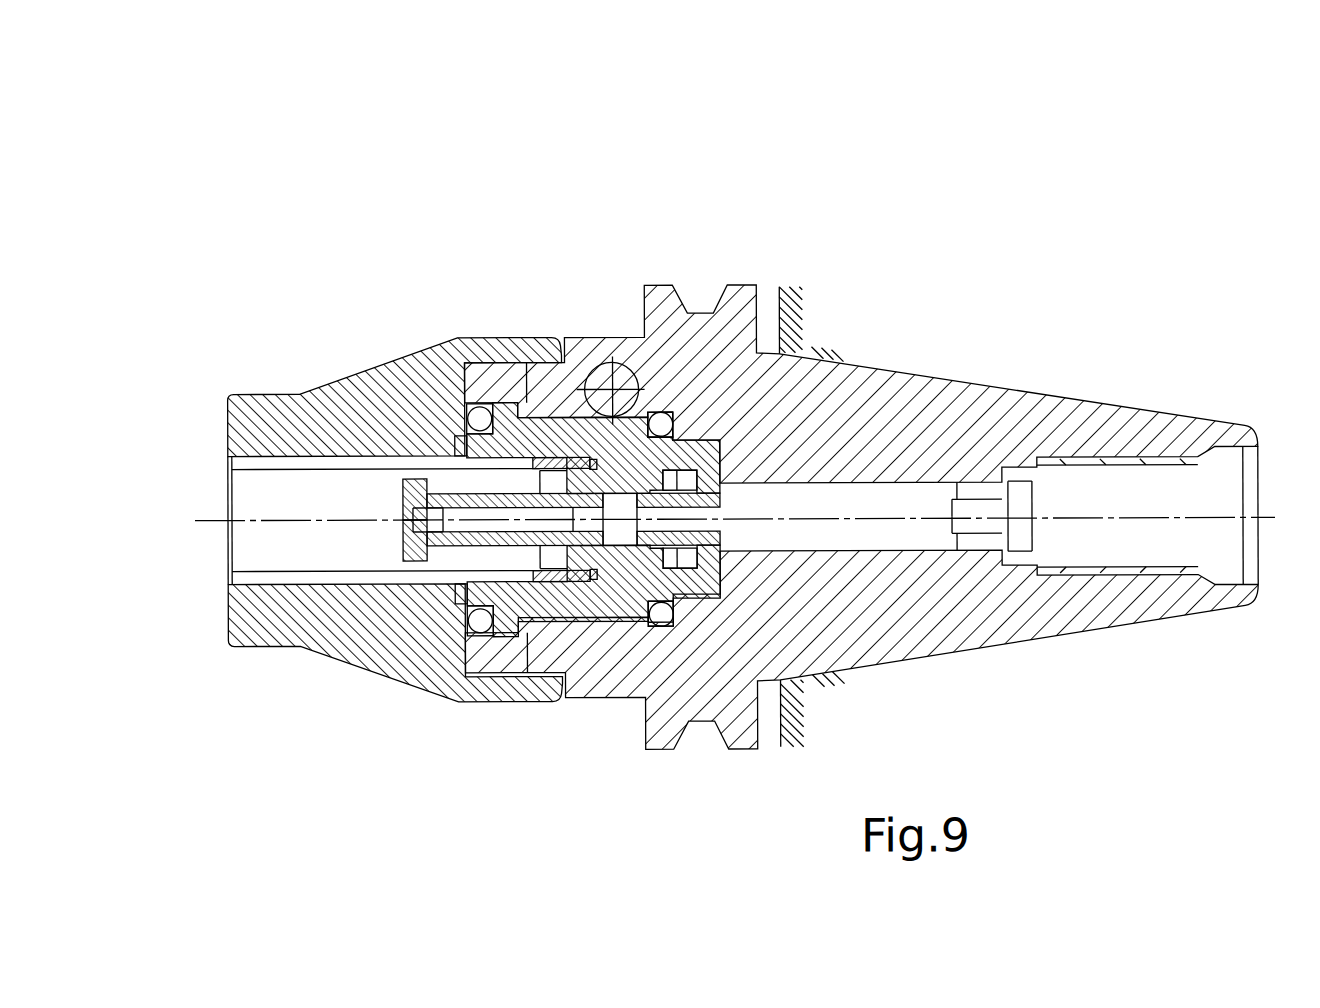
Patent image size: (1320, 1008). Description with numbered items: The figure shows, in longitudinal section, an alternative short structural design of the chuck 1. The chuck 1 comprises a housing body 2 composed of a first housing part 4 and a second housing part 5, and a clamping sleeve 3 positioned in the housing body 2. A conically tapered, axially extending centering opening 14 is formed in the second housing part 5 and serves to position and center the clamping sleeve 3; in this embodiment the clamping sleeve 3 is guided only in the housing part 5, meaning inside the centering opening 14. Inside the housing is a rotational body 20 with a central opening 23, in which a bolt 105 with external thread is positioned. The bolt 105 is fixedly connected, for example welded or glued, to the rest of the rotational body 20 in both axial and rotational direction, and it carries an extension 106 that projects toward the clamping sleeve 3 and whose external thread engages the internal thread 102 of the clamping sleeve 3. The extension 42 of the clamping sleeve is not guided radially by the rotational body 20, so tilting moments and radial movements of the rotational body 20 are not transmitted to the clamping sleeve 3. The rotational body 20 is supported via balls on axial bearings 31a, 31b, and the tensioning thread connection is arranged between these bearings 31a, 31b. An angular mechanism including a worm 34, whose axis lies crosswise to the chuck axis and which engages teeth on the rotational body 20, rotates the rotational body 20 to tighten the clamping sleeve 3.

The chuck 1 is at (710, 175).
The housing body 2 is at (533, 210).
The clamping sleeve 3 is at (226, 578).
The first housing part 4 is at (983, 423).
The second housing part 5 is at (316, 412).
The centering opening 14 is at (220, 605).
The rotational body 20 is at (527, 420).
The central opening 23 is at (683, 480).
The axial bearing 31a is at (478, 622).
The axial bearing 31b is at (663, 615).
The worm 34 is at (607, 383).
The extension 42 is at (648, 410).
The internal thread 102 is at (587, 578).
The bolt 105 is at (838, 378).
The extension 106 is at (645, 615).